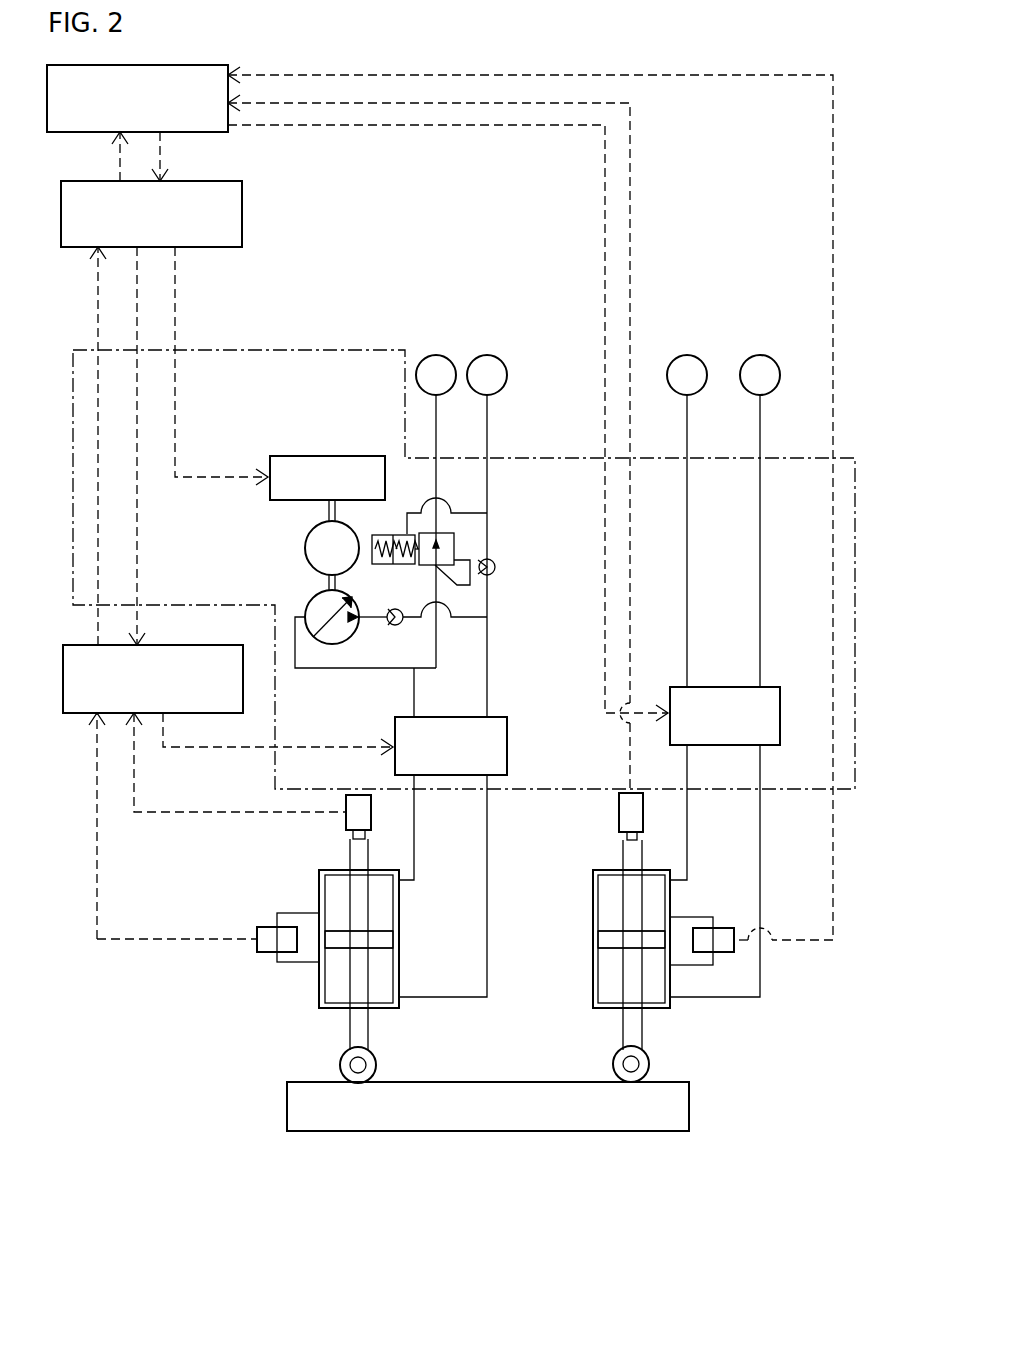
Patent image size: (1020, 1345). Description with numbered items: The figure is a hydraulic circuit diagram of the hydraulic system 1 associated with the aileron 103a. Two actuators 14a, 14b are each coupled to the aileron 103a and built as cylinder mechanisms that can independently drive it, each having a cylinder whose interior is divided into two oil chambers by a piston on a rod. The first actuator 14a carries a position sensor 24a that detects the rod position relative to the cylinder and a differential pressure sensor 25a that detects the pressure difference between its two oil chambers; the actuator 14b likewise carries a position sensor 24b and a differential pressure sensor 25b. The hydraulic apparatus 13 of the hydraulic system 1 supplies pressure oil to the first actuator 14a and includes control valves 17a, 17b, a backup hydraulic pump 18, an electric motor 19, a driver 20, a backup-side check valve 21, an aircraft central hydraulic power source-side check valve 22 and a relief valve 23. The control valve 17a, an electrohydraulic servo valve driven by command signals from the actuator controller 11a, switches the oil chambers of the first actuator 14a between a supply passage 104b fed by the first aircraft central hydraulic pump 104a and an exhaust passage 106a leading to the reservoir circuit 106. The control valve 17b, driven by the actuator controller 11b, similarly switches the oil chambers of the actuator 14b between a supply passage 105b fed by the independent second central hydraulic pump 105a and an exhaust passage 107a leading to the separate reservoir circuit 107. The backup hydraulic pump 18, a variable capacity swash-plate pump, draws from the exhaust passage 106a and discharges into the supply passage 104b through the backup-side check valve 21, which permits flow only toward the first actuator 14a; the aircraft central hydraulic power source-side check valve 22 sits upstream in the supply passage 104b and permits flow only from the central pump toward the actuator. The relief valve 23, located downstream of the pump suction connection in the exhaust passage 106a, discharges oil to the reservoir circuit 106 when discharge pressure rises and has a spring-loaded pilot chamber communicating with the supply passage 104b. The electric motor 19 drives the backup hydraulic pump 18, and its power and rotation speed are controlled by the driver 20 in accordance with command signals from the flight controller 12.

The hydraulic system 1 is at (438, 179).
The actuator controller 11a is at (80, 713).
The actuator controller 11b is at (205, 132).
The flight controller 12 is at (242, 196).
The hydraulic apparatus 13 is at (275, 763).
The first actuator 14a is at (321, 979).
The actuator 14b is at (655, 983).
The control valve 17a is at (508, 722).
The control valve 17b is at (781, 704).
The backup hydraulic pump 18 is at (317, 597).
The electric motor 19 is at (307, 533).
The driver 20 is at (290, 456).
The backup-side check valve 21 is at (383, 632).
The aircraft central hydraulic power source-side check valve 22 is at (500, 562).
The relief valve 23 is at (393, 530).
The position sensor 24a is at (360, 810).
The position sensor 24b is at (628, 812).
The differential pressure sensor 25a is at (237, 960).
The differential pressure sensor 25b is at (725, 930).
The aileron 103a is at (475, 1131).
The first aircraft central hydraulic pump 104a is at (487, 355).
The supply passage 104b is at (490, 422).
The aircraft central hydraulic pump 105a is at (760, 355).
The supply passage 105b is at (762, 590).
The reservoir circuit 106 is at (436, 355).
The exhaust passage 106a is at (436, 410).
The reservoir circuit 107 is at (687, 355).
The exhaust passage 107a is at (692, 555).